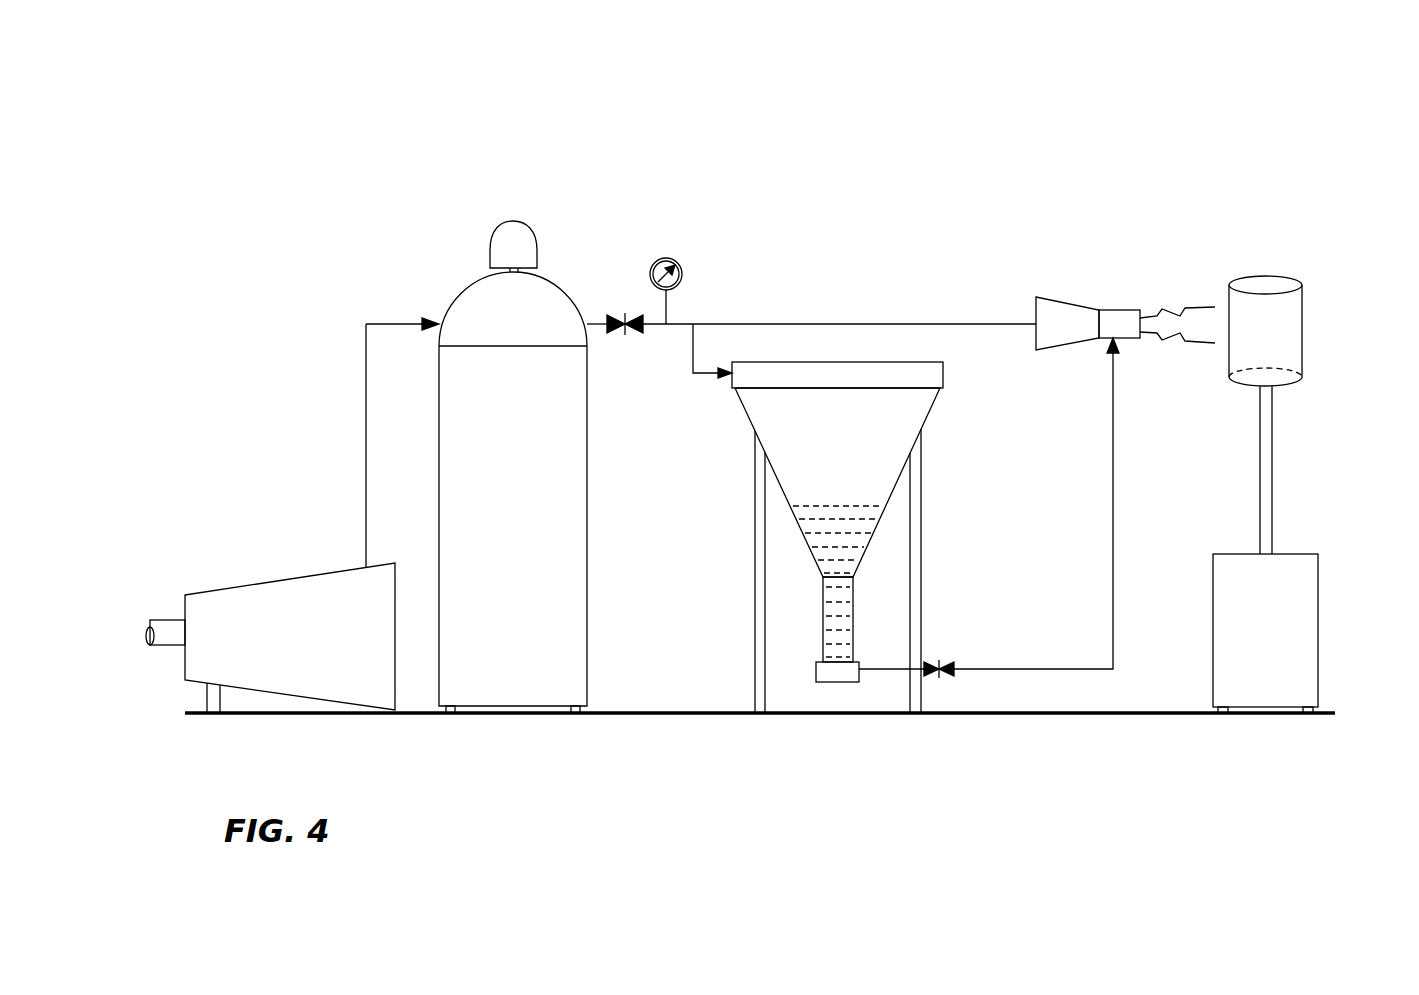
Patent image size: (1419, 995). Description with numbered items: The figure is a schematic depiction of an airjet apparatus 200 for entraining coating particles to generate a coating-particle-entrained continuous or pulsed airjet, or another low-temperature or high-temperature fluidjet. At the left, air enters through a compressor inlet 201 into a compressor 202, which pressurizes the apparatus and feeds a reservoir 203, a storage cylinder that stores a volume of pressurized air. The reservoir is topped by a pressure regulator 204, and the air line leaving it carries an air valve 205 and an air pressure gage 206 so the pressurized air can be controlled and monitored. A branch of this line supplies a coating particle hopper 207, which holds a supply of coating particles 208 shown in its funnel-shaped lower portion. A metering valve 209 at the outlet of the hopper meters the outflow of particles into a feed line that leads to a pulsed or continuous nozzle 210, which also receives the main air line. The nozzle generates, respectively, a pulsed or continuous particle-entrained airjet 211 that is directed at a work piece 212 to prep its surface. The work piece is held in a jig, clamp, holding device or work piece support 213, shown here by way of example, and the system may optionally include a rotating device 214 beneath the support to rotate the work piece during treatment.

The airjet apparatus 200 is at (1299, 138).
The compressor inlet 201 is at (172, 631).
The compressor 202 is at (320, 632).
The reservoir 203 is at (535, 480).
The pressure regulator 204 is at (496, 256).
The air valve 205 is at (615, 314).
The air pressure gage 206 is at (678, 262).
The coating particle hopper 207 is at (832, 370).
The coating particles 208 is at (853, 480).
The metering valve 209 is at (941, 661).
The pulsed or continuous nozzle 210 is at (1085, 313).
The particle-entrained airjet 211 is at (1190, 308).
The work piece 212 is at (1253, 286).
The work piece support 213 is at (1265, 451).
The rotating device 214 is at (1288, 631).